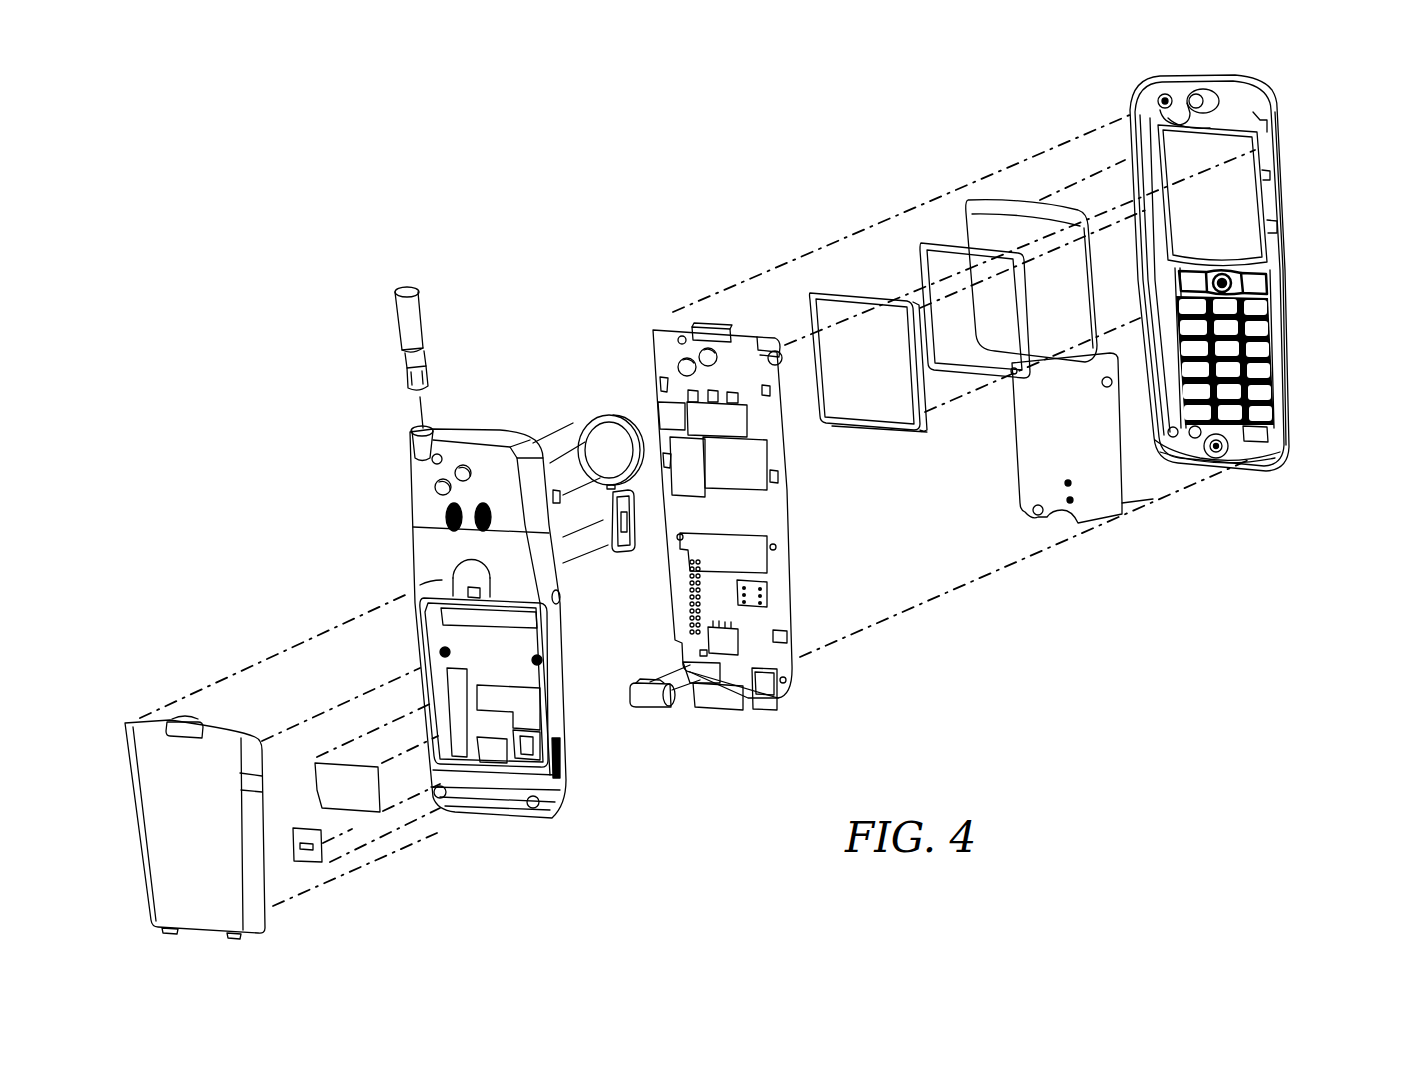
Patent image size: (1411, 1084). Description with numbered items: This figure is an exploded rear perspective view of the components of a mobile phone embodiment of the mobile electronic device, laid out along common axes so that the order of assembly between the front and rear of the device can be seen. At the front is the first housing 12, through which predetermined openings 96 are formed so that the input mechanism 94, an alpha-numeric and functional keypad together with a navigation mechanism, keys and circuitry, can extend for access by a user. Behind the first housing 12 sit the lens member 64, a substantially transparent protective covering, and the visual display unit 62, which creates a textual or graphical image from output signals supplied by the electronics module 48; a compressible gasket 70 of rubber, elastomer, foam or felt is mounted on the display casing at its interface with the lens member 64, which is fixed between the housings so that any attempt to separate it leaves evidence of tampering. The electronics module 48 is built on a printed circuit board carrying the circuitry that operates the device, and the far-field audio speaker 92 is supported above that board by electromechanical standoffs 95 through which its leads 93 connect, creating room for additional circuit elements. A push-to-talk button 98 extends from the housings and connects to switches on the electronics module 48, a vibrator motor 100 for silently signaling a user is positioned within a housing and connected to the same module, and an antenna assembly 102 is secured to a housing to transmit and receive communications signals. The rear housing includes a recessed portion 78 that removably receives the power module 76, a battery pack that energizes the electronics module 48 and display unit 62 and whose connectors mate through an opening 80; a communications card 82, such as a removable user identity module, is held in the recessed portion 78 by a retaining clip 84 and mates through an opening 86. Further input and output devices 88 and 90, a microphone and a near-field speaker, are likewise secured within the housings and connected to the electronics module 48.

The first housing 12 is at (1280, 157).
The electronics module 48 is at (705, 322).
The visual display unit 62 is at (850, 297).
The lens member 64 is at (1017, 210).
The compressible gasket 70 is at (947, 240).
The power module 76 is at (152, 726).
The recessed portion 78 is at (465, 666).
The opening 80 is at (487, 757).
The communications card 82 is at (318, 772).
The retaining clip 84 is at (322, 860).
The opening 86 is at (544, 772).
The input and/or output device 88 is at (1212, 466).
The input and/or output device 90 is at (1160, 103).
The far-field audio speaker 92 is at (603, 433).
The leads 93 is at (641, 433).
The input mechanism 94 is at (1123, 514).
The electromechanical standoffs 95 is at (748, 403).
The predetermined openings 96 is at (1277, 360).
The push-to-talk button 98 is at (620, 557).
The vibrator motor 100 is at (707, 702).
The antenna assembly 102 is at (425, 328).